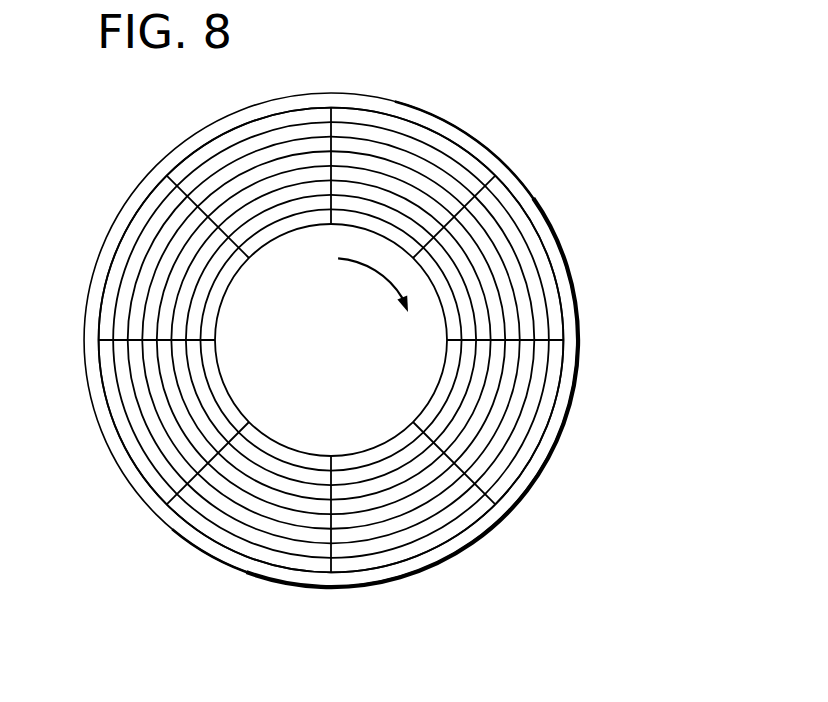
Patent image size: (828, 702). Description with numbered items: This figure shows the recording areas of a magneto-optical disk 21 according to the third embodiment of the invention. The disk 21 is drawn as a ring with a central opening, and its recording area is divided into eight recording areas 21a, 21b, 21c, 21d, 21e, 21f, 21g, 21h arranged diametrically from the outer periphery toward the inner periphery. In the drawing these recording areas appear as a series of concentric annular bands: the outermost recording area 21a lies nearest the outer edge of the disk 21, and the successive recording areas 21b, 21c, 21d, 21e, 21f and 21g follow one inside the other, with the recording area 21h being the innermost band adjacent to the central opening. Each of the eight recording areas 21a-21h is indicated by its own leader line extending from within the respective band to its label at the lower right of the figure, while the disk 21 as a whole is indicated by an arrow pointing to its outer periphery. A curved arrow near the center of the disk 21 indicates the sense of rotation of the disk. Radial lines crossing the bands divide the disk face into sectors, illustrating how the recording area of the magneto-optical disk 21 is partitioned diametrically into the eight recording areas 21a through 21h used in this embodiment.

The magneto-optical disk 21 is at (518, 170).
The recording area 21a is at (555, 360).
The recording area 21b is at (537, 377).
The recording area 21c is at (518, 392).
The recording area 21d is at (500, 405).
The recording area 21e is at (480, 418).
The recording area 21f is at (460, 427).
The recording area 21g is at (440, 428).
The recording area 21h is at (413, 427).